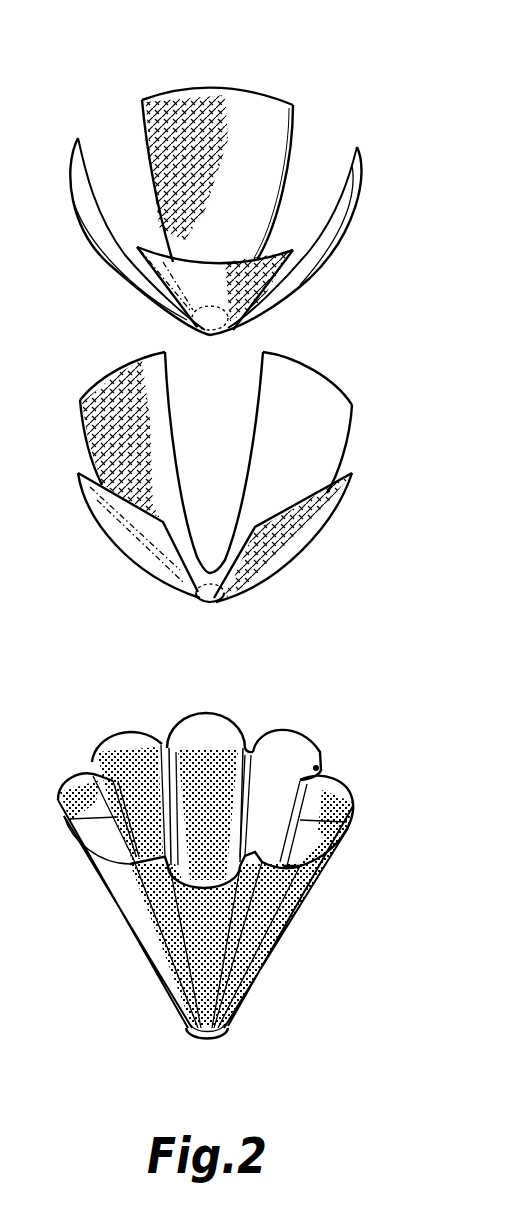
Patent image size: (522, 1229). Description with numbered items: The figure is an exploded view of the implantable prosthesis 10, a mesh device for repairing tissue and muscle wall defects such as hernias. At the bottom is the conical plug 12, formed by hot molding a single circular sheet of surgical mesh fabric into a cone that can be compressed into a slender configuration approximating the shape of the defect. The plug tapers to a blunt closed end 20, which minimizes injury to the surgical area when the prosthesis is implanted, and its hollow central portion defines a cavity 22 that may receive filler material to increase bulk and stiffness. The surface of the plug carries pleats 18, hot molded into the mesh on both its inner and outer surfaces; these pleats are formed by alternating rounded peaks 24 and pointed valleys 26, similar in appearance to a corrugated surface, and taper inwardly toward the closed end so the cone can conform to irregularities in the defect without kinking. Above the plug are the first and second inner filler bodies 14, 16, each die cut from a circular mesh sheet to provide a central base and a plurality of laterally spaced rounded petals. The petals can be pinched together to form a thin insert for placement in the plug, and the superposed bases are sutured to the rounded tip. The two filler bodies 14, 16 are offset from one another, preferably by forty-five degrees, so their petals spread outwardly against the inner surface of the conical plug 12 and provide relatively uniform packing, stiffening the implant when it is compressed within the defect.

The implantable prosthesis 10 is at (382, 80).
The conical plug 12 is at (211, 885).
The inner filler body 14 is at (203, 515).
The inner filler body 16 is at (208, 242).
The pleats 18 is at (208, 958).
The blunt closed end 20 is at (202, 1043).
The cavity 22 is at (212, 743).
The rounded peaks 24 is at (350, 828).
The pointed valleys 26 is at (318, 767).